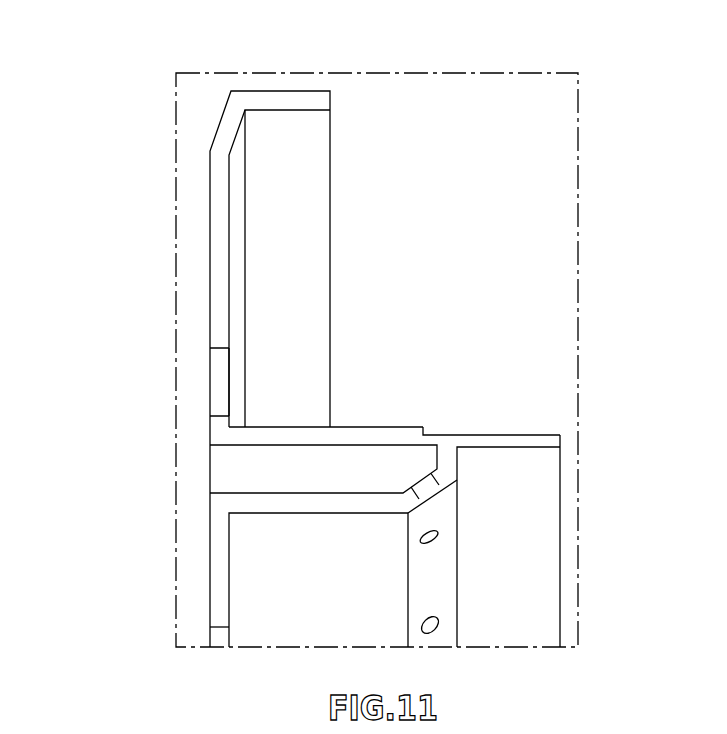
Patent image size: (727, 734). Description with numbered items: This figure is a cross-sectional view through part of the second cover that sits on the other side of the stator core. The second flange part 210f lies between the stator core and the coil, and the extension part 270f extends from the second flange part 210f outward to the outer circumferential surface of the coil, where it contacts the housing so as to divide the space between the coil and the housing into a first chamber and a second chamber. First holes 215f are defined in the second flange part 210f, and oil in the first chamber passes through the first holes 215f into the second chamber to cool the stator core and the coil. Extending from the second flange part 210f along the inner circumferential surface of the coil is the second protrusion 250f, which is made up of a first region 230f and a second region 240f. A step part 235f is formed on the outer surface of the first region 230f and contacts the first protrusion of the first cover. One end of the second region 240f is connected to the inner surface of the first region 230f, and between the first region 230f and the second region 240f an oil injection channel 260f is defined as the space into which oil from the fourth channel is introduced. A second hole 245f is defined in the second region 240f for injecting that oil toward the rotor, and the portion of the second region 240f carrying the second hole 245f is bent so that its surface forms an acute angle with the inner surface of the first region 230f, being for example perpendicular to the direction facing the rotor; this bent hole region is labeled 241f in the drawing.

The second flange part 210f is at (222, 253).
The first holes 215f is at (222, 376).
The extension part 270f is at (278, 103).
The oil injection channel 260f is at (377, 470).
The step part 235f is at (425, 427).
The second protrusion 250f is at (235, 541).
The first region 230f is at (257, 435).
The second region 240f is at (257, 506).
The second hole 245f is at (428, 488).
The side wall 241f is at (433, 582).